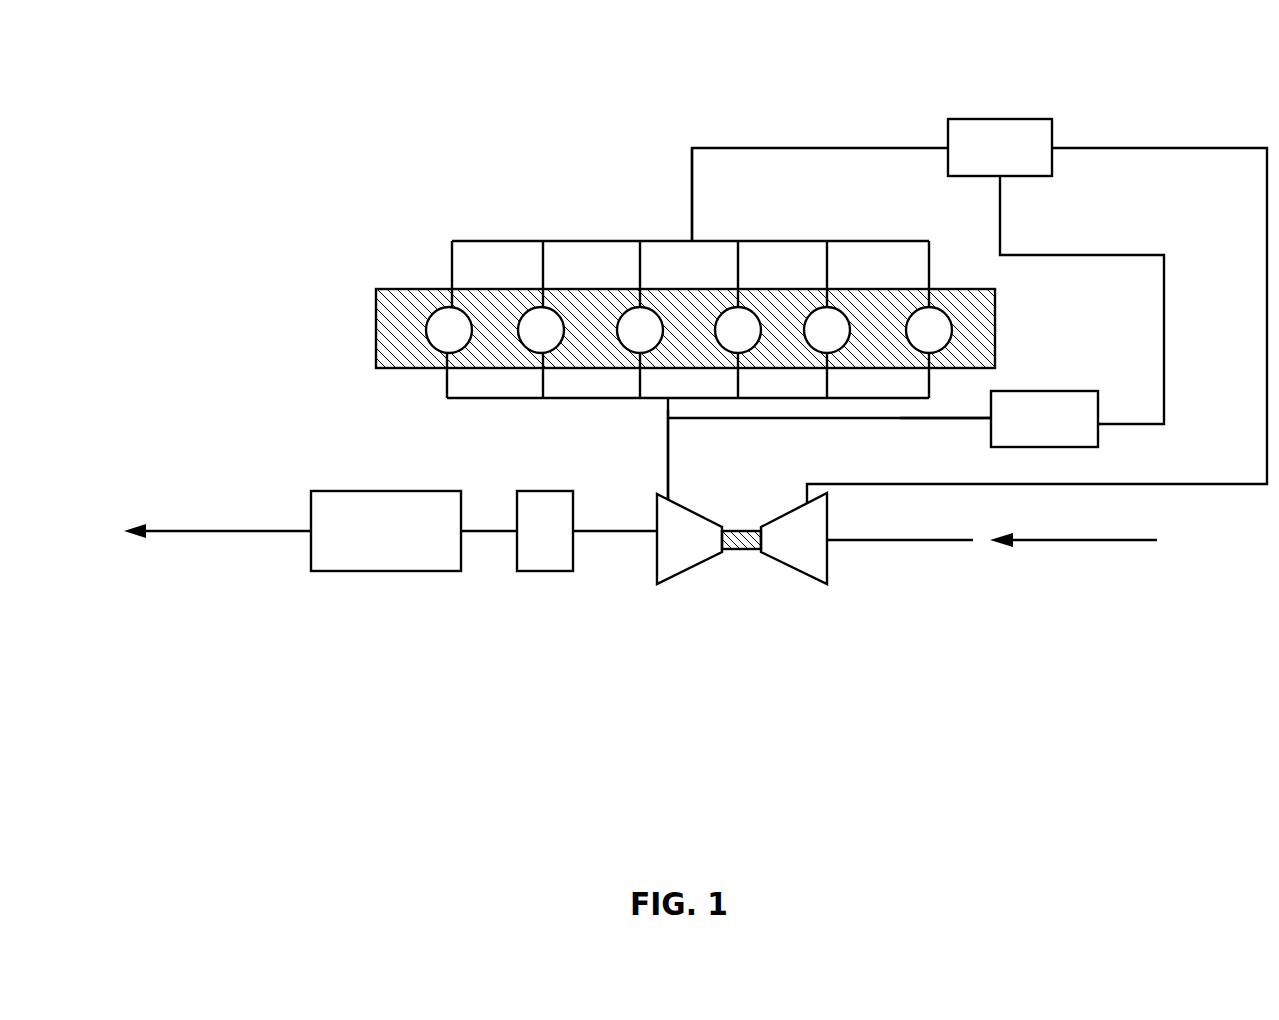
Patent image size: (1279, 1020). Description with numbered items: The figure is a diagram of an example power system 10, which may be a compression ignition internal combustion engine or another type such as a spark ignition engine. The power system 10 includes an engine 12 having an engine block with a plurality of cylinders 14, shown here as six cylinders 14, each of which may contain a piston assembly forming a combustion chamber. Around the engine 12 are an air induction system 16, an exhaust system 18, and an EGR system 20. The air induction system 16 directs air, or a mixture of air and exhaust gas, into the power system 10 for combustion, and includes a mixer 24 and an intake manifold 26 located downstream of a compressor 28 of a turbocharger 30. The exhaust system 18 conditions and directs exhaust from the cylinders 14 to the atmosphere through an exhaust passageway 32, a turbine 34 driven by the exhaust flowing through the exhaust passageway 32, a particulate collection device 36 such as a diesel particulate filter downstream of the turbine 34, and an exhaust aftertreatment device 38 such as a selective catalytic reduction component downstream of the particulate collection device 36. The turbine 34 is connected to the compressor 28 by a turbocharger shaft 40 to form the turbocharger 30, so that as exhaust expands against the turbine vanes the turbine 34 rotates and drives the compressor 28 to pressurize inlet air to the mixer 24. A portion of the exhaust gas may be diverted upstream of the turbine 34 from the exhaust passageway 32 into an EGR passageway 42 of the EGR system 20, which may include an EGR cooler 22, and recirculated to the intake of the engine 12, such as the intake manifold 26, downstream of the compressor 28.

The power system 10 is at (383, 113).
The engine 12 is at (395, 265).
The cylinders 14 is at (942, 341).
The air induction system 16 is at (773, 645).
The exhaust system 18 is at (197, 645).
The EGR system 20 is at (1075, 370).
The EGR cooler 22 is at (1032, 430).
The mixer 24 is at (987, 160).
The intake manifold 26 is at (692, 193).
The compressor 28 is at (827, 563).
The turbocharger 30 is at (758, 580).
The exhaust passageway 32 is at (667, 463).
The turbine 34 is at (659, 562).
The particulate collection device 36 is at (532, 542).
The exhaust aftertreatment device 38 is at (373, 542).
The turbocharger shaft 40 is at (747, 528).
The EGR passageway 42 is at (958, 418).